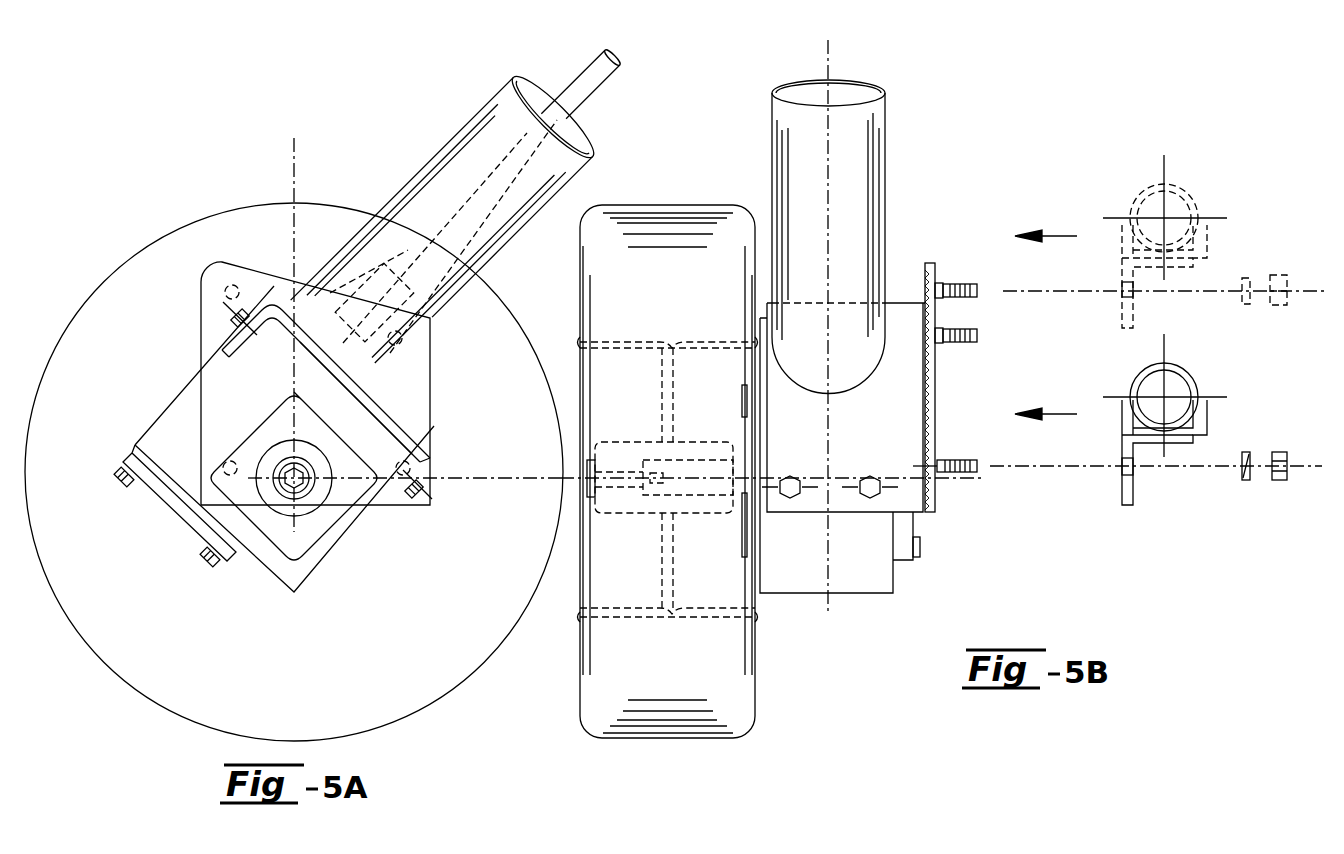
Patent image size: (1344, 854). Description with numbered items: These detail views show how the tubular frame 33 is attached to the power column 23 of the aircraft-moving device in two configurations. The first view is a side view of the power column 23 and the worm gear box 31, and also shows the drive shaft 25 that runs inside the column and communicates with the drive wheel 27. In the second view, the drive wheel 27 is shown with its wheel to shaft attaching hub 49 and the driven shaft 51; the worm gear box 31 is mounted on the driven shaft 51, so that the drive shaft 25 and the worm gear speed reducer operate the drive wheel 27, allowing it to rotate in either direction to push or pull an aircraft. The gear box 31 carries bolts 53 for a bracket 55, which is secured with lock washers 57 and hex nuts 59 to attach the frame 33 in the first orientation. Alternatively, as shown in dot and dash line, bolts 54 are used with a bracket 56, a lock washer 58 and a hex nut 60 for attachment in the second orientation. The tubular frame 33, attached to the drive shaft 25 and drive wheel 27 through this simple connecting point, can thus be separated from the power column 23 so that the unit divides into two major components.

In FIG. 5A, the tubular power column 23 is at (435, 160).
In FIG. 5B, the tubular power column 23 is at (878, 145).
In FIG. 5A, the drive shaft 25 is at (575, 82).
In FIG. 5A, the drive wheel 27 is at (430, 708).
In FIG. 5B, the drive wheel 27 is at (740, 692).
In FIG. 5A, the worm gear box 31 is at (287, 572).
In FIG. 5B, the worm gear box 31 is at (893, 575).
In FIG. 5B, the tubular frame 33 is at (1185, 192).
In FIG. 5B, the wheel to shaft attaching hub 49 is at (615, 498).
In FIG. 5B, the driven shaft 51 is at (705, 468).
In FIG. 5B, the bolts 53 is at (960, 474).
In FIG. 5B, the bolts 54 is at (945, 287).
In FIG. 5B, the bracket 55 is at (1128, 507).
In FIG. 5B, the bracket 56 is at (1122, 312).
In FIG. 5B, the lock washers 57 is at (1245, 482).
In FIG. 5B, the lock washer 58 is at (1246, 277).
In FIG. 5B, the hex nuts 59 is at (1283, 482).
In FIG. 5B, the hex nut 60 is at (1285, 277).